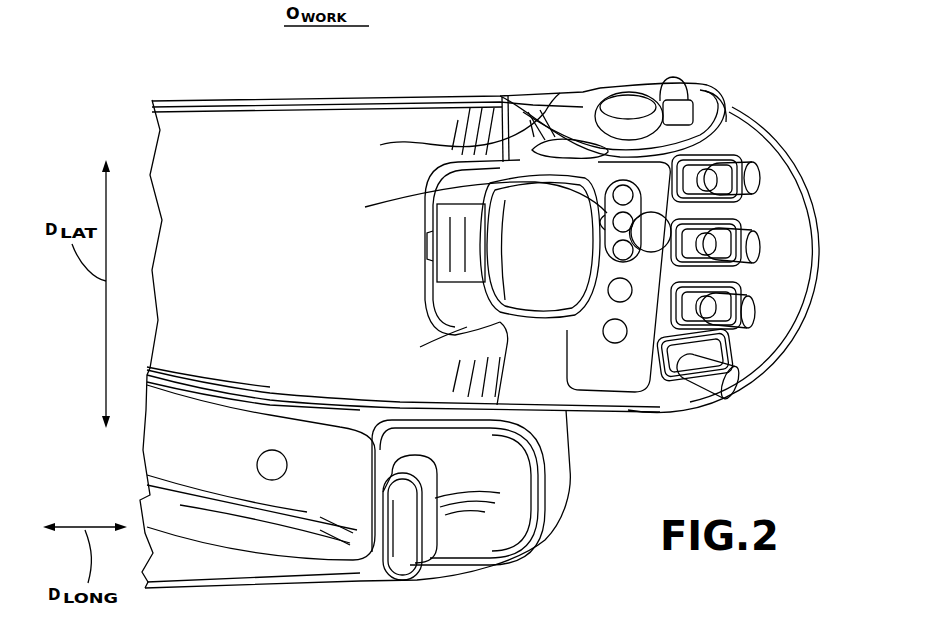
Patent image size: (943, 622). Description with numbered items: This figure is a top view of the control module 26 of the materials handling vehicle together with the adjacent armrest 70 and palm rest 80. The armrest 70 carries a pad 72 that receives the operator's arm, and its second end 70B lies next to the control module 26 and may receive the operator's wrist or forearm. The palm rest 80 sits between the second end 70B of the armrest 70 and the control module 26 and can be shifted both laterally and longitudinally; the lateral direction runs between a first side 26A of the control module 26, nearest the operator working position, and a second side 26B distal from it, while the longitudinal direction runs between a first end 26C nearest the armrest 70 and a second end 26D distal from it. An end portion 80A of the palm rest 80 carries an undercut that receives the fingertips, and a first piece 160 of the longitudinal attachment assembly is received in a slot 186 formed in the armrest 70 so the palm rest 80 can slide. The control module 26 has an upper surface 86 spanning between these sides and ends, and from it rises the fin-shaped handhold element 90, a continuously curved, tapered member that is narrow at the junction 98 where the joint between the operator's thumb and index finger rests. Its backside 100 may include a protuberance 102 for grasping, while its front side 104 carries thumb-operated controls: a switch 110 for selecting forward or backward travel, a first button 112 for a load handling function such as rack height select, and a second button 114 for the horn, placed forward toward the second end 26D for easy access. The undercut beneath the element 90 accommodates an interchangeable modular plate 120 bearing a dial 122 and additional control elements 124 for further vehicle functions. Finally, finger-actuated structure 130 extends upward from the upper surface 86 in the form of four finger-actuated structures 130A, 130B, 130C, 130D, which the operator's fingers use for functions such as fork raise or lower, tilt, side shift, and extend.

The armrest 70 is at (193, 124).
The pad 72 is at (323, 140).
The second end of the armrest 70B is at (395, 118).
The junction 98 is at (440, 138).
The first side of the control module 26A is at (540, 95).
The fin-shaped handhold element 90 is at (576, 105).
The first button 112 is at (712, 110).
The front side of the element 104 is at (698, 88).
The switch 110 is at (637, 97).
The second button 114 is at (670, 72).
The control module 26 is at (746, 106).
The backside of the element 100 is at (722, 135).
The second end of the control module 26D is at (797, 210).
The upper surface 86 is at (790, 297).
The first finger-actuated structure 130A is at (752, 177).
The second finger-actuated structure 130B is at (752, 244).
The third finger-actuated structure 130C is at (745, 320).
The fourth finger-actuated structure 130D is at (738, 390).
The finger-actuated structure 130 is at (762, 369).
The end portion of the palm rest 80A is at (588, 292).
The dial 122 is at (657, 240).
The modular plate 120 is at (607, 310).
The palm rest 80 is at (558, 256).
The first piece of the longitudinal attachment assembly 160 is at (458, 288).
The slot 186 is at (430, 245).
The protuberance 102 is at (410, 197).
The first end of the control module 26C is at (490, 330).
The second side of the control module 26B is at (605, 413).
The additional control elements 124 is at (568, 410).